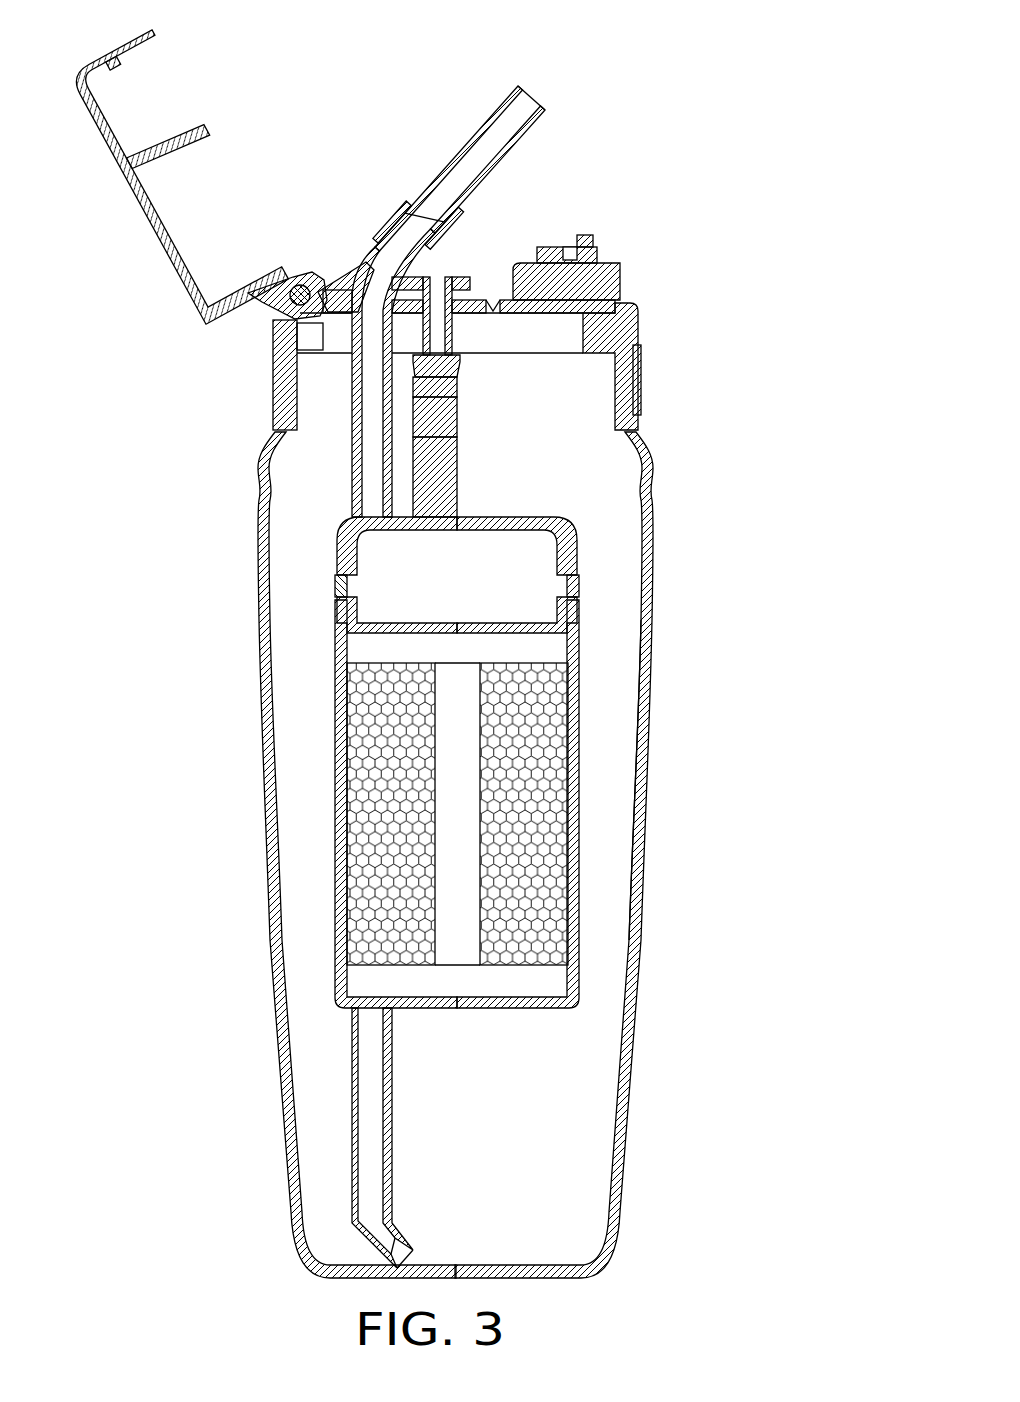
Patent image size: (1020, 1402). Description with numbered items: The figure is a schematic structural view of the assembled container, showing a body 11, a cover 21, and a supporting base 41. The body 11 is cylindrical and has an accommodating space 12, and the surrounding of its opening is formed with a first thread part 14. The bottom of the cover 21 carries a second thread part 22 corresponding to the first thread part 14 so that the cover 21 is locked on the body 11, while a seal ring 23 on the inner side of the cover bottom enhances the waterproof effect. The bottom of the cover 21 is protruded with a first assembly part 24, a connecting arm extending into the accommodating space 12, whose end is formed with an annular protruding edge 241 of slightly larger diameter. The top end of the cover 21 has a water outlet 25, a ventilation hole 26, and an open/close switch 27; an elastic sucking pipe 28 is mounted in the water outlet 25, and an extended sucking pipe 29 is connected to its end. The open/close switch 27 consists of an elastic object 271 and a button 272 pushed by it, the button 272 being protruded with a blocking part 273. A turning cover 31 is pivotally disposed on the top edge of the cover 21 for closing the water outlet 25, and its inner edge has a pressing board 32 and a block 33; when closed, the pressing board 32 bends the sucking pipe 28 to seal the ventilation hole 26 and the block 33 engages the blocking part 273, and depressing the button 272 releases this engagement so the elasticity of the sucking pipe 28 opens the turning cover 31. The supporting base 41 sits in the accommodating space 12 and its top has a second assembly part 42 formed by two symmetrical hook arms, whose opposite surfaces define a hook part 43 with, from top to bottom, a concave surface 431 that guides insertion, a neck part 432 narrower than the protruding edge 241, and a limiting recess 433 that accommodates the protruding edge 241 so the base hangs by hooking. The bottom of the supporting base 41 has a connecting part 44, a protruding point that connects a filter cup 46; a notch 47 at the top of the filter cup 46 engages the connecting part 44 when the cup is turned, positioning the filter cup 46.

The body 11 is at (650, 790).
The accommodating space 12 is at (612, 742).
The first thread part 14 is at (275, 405).
The cover 21 is at (640, 330).
The second thread part 22 is at (295, 412).
The seal ring 23 is at (642, 362).
The first assembly part 24 is at (455, 335).
The protruding edge 241 is at (415, 382).
The water outlet 25 is at (424, 222).
The ventilation hole 26 is at (493, 306).
The open/close switch 27 is at (664, 276).
The elastic object 271 is at (612, 292).
The button 272 is at (605, 262).
The blocking part 273 is at (600, 240).
The elastic sucking pipe 28 is at (470, 148).
The extended sucking pipe 29 is at (350, 500).
The turning cover 31 is at (193, 177).
The pressing board 32 is at (167, 147).
The block 33 is at (113, 63).
The supporting base 41 is at (578, 548).
The second assembly part 42 is at (362, 272).
The hook part 43 is at (454, 436).
The concave surface 431 is at (457, 366).
The neck part 432 is at (455, 402).
The limiting recess 433 is at (457, 440).
The connecting part 44 is at (580, 580).
The filter cup 46 is at (580, 896).
The notch 47 is at (582, 600).